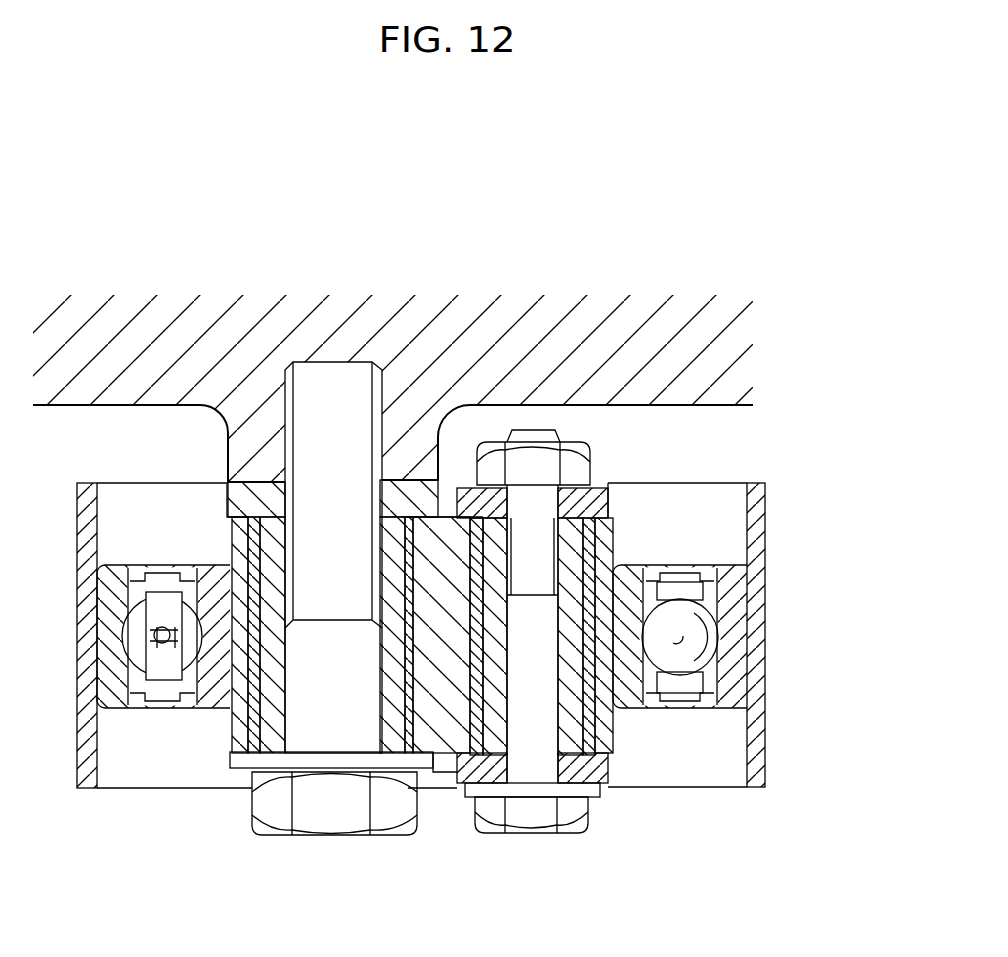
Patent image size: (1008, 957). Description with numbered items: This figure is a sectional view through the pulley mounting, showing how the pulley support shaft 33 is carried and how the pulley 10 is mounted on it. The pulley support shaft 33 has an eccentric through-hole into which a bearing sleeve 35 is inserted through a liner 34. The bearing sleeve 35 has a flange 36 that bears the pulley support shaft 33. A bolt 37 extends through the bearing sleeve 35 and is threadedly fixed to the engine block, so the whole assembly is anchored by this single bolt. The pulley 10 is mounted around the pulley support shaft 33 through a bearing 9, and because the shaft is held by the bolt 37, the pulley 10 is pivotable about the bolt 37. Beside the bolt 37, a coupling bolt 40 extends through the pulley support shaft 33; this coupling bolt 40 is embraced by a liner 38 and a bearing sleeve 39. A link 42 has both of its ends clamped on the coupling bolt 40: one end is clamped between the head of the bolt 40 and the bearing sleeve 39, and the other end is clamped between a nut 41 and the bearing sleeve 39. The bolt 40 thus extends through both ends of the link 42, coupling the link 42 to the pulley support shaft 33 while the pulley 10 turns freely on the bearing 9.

The bearing 9 is at (735, 627).
The pulley 10 is at (752, 570).
The pulley support shaft 33 is at (443, 735).
The liner 34 is at (248, 735).
The bearing sleeve 35 is at (273, 740).
The flange 36 is at (255, 492).
The bolt 37 is at (332, 808).
The liner 38 is at (612, 725).
The bearing sleeve 39 is at (573, 740).
The coupling bolt 40 is at (527, 815).
The nut 41 is at (568, 460).
The link 42 is at (606, 484).